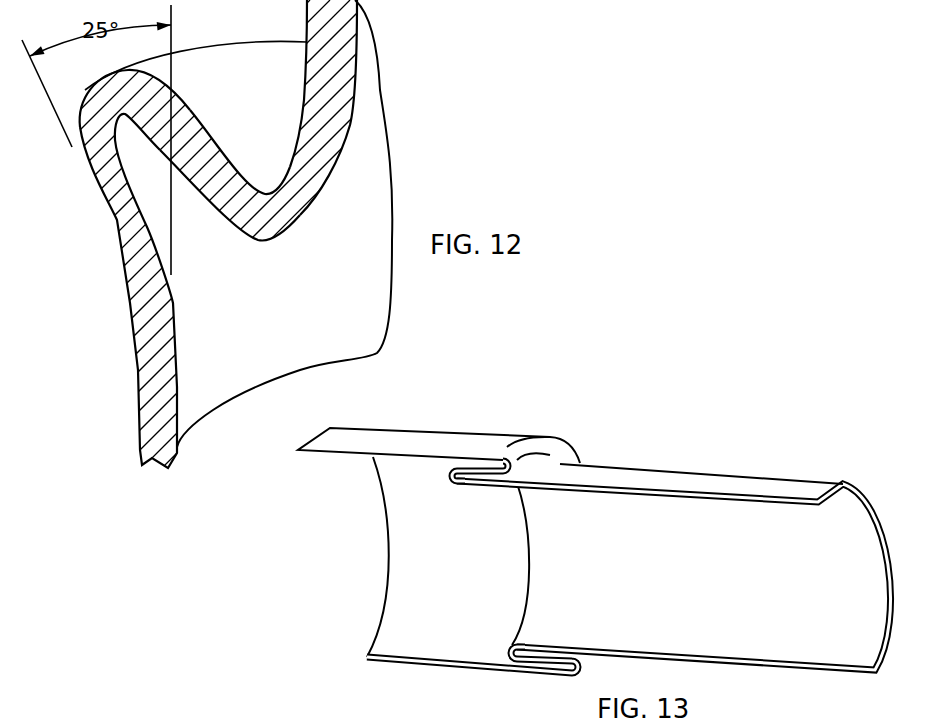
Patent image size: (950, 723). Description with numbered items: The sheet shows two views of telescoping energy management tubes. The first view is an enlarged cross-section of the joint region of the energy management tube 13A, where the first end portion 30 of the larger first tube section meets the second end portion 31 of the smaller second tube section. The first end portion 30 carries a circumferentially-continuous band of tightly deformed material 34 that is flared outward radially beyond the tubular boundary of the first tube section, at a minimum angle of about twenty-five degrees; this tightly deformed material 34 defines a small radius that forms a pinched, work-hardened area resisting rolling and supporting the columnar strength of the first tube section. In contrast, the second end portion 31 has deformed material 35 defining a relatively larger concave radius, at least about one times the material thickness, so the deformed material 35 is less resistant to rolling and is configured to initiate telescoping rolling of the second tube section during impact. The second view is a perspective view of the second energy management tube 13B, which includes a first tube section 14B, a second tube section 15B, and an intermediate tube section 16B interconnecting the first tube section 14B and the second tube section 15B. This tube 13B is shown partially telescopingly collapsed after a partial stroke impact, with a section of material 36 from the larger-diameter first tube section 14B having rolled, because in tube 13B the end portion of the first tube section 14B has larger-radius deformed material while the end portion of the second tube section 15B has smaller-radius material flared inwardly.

In FIG. 12, the energy management tube 13A is at (418, 50).
In FIG. 12, the first end portion 30 is at (117, 220).
In FIG. 12, the tightly deformed material 34 is at (92, 100).
In FIG. 12, the second end portion 31 is at (340, 158).
In FIG. 12, the deformed material 35 is at (300, 213).
In FIG. 13, the second energy management tube 13B is at (694, 388).
In FIG. 13, the first tube section 14B is at (383, 430).
In FIG. 13, the section of material 36 is at (488, 460).
In FIG. 13, the second tube section 15B is at (702, 473).
In FIG. 13, the intermediate tube section 16B is at (450, 477).